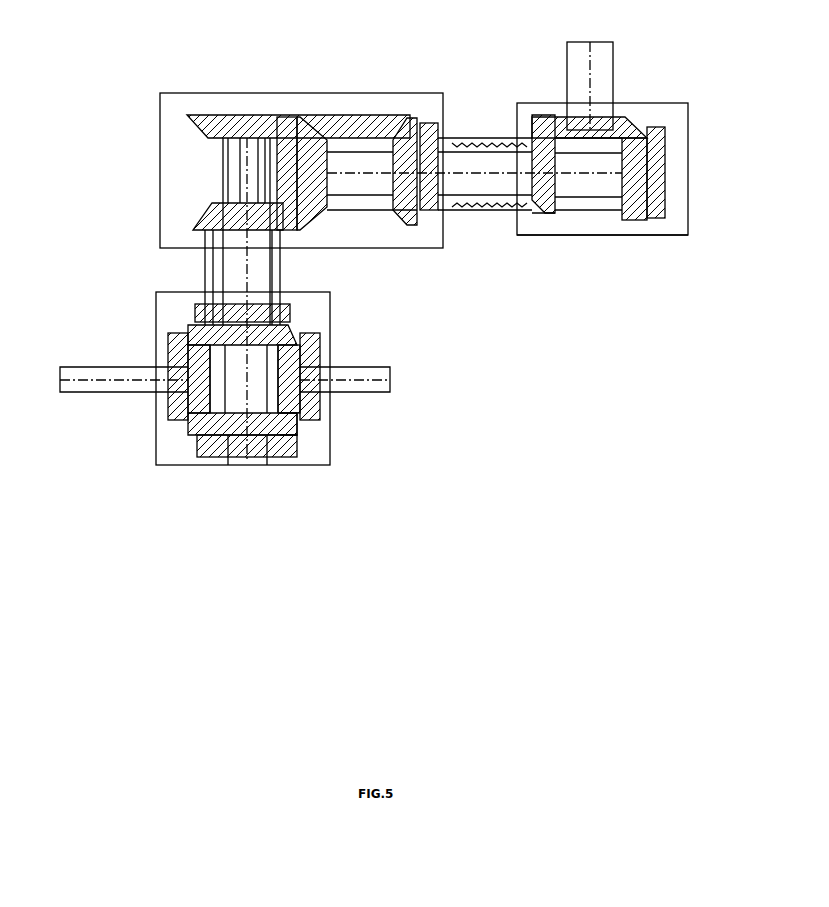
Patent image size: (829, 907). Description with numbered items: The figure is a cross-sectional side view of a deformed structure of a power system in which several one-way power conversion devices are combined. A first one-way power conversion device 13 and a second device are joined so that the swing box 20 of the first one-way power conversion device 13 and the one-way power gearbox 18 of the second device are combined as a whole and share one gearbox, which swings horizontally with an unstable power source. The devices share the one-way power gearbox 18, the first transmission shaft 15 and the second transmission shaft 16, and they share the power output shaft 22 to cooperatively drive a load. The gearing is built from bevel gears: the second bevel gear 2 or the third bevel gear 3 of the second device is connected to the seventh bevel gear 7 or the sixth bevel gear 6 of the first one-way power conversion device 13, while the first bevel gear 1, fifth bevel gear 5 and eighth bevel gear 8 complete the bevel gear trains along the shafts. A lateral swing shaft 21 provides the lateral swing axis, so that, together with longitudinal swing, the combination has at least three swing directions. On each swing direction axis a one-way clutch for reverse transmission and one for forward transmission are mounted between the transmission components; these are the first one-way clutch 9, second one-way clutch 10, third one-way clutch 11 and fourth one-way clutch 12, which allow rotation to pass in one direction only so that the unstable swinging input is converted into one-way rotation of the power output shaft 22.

The first bevel gear 1 is at (198, 225).
The second bevel gear 2 is at (205, 128).
The third bevel gear 3 is at (292, 212).
The fifth bevel gear 5 is at (407, 145).
The sixth bevel gear 6 is at (313, 145).
The seventh bevel gear 7 is at (323, 125).
The eighth bevel gear 8 is at (297, 342).
The first one-way clutch 9 is at (430, 128).
The second one-way clutch 10 is at (653, 140).
The third one-way clutch 11 is at (178, 410).
The fourth one-way clutch 12 is at (308, 417).
The first one-way power conversion device 13 is at (450, 140).
The first transmission shaft 15 is at (213, 253).
The second transmission shaft 16 is at (372, 197).
The one-way power gearbox 18 is at (553, 233).
The swing box 20 is at (252, 467).
The lateral swing shaft 21 is at (83, 368).
The power output shaft 22 is at (578, 50).